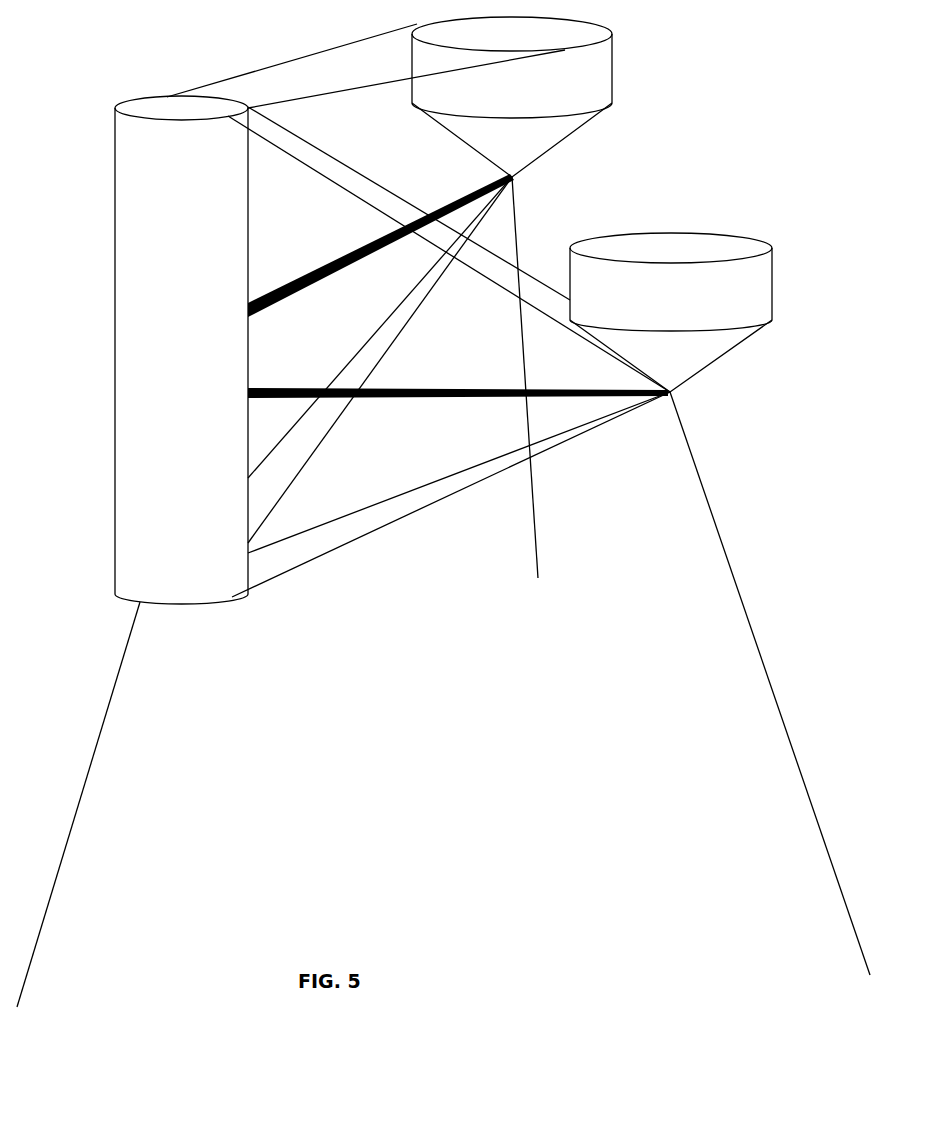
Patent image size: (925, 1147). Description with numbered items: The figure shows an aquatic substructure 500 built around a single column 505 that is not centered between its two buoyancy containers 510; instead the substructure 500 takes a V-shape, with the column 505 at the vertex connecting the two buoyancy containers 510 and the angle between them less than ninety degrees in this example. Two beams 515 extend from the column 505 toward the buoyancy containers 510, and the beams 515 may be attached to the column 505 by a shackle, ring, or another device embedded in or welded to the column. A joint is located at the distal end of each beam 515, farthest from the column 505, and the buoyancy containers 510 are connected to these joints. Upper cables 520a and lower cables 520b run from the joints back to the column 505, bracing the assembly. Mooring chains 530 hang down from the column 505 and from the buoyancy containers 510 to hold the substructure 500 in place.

The aquatic substructure 500 is at (59, 203).
The column 505 is at (180, 301).
The buoyancy containers 510 is at (563, 98).
The beams 515 is at (305, 256).
The upper cables 520a is at (366, 62).
The lower cables 520b is at (451, 387).
The mooring chains 530 is at (443, 592).